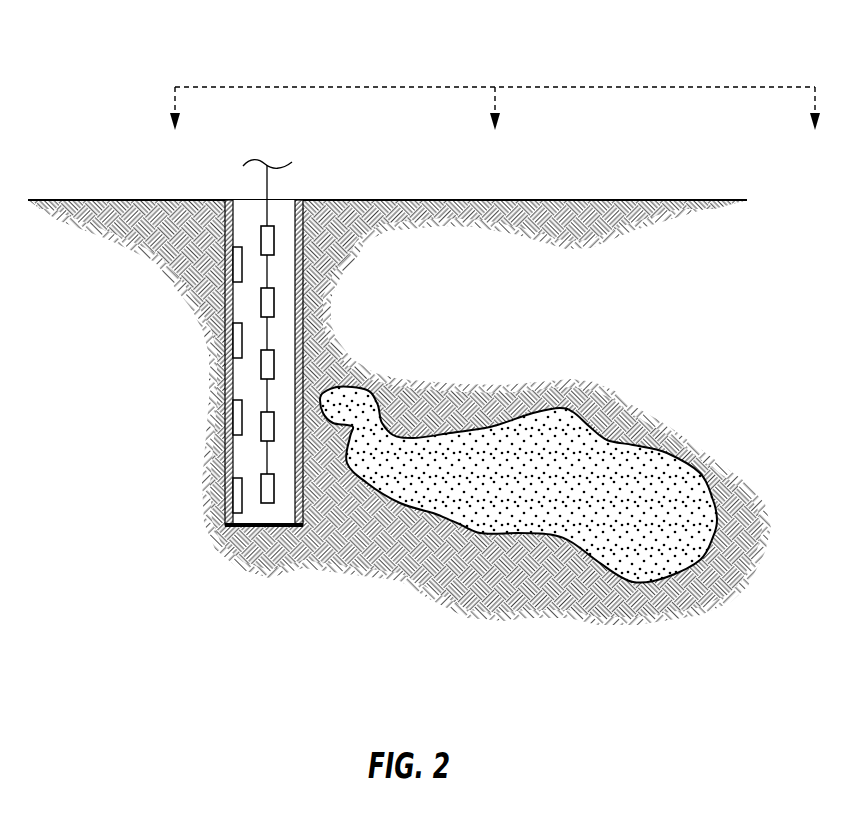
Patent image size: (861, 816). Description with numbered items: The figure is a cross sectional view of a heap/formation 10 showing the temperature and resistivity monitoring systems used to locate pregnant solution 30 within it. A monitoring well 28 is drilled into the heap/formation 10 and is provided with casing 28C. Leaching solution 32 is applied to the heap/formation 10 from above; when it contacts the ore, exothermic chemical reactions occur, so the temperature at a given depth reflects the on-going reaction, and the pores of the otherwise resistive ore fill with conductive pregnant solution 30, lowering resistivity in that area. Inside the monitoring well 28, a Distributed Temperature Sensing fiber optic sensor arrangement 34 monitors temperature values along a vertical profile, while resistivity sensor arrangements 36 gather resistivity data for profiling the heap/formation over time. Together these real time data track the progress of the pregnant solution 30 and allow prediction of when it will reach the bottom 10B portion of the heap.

The heap/formation 10 is at (587, 248).
The bottom portion of the heap 10B is at (633, 628).
The monitoring well 28 is at (249, 215).
The casing 28C is at (225, 377).
The pregnant solution 30 is at (565, 498).
The leaching solution 32 is at (578, 86).
The Distributed Temperature Sensing fiber optic sensor arrangement 34 is at (275, 240).
The resistivity sensor arrangement 36 is at (233, 263).